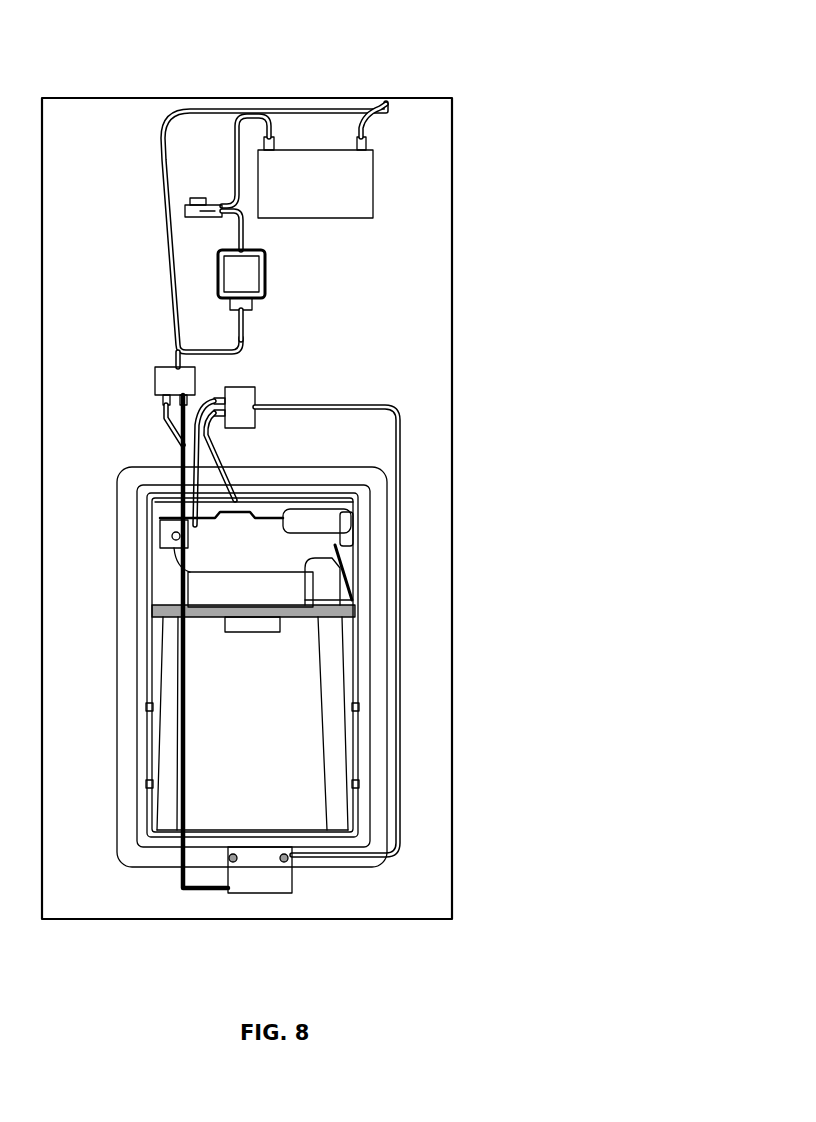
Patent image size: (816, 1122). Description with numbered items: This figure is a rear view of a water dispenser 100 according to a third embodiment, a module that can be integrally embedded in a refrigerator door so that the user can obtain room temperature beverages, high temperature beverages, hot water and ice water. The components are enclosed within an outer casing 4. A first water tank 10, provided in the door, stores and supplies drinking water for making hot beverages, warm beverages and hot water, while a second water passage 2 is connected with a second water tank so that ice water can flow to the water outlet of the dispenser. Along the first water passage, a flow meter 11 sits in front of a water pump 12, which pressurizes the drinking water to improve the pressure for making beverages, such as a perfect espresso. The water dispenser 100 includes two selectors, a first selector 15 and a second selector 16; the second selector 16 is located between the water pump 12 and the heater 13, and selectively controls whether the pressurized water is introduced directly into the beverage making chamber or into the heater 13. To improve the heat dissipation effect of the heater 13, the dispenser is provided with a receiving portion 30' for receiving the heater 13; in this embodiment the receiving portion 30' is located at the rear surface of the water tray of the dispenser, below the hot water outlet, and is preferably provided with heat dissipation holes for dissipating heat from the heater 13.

The water dispenser 100 is at (278, 33).
The outer casing 4 is at (452, 98).
The second water passage 2 is at (160, 179).
The first water tank 10 is at (345, 203).
The flow meter 11 is at (196, 218).
The water pump 12 is at (246, 285).
The second selector 16 is at (166, 382).
The first selector 15 is at (245, 418).
The receiving portion 30' is at (180, 651).
The heater 13 is at (272, 886).